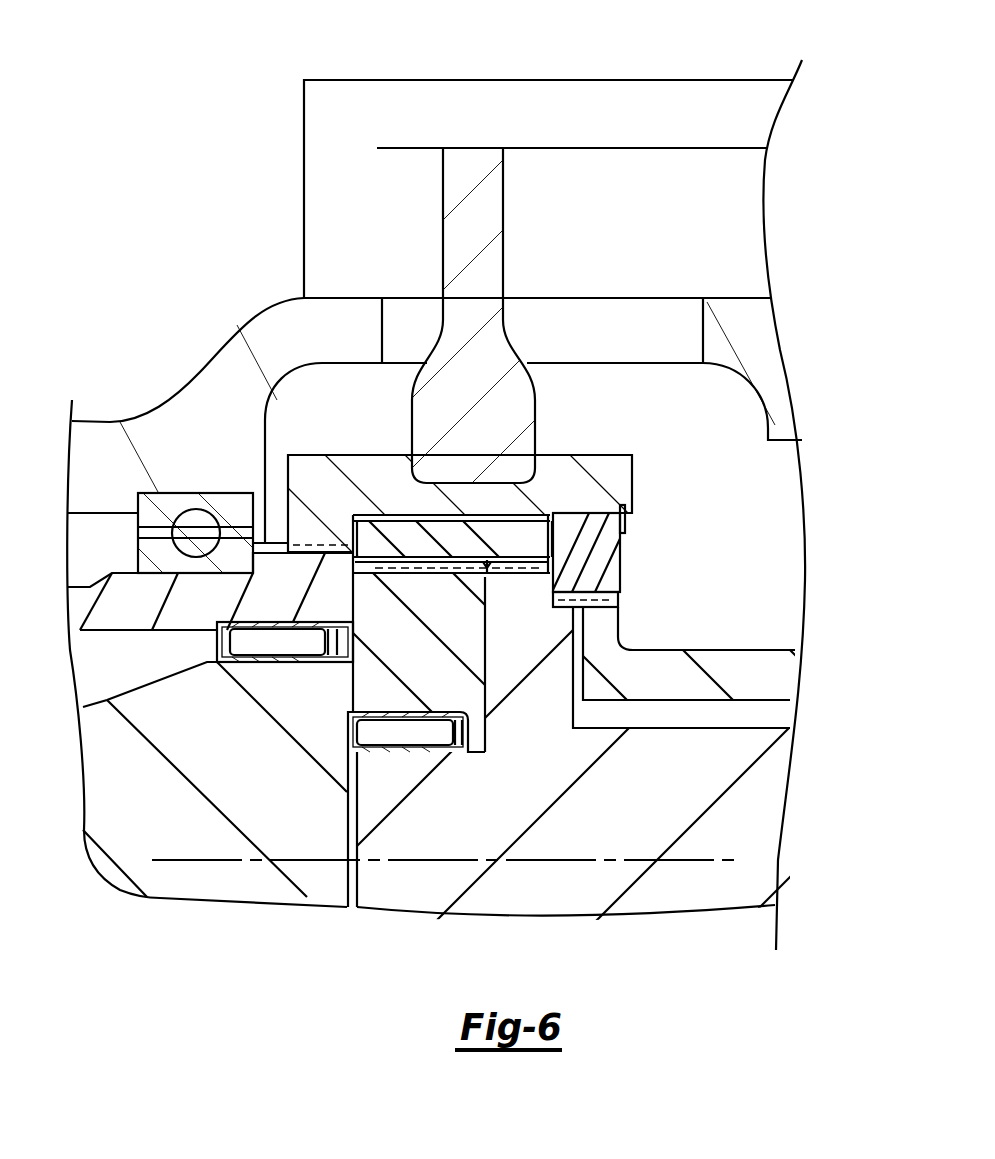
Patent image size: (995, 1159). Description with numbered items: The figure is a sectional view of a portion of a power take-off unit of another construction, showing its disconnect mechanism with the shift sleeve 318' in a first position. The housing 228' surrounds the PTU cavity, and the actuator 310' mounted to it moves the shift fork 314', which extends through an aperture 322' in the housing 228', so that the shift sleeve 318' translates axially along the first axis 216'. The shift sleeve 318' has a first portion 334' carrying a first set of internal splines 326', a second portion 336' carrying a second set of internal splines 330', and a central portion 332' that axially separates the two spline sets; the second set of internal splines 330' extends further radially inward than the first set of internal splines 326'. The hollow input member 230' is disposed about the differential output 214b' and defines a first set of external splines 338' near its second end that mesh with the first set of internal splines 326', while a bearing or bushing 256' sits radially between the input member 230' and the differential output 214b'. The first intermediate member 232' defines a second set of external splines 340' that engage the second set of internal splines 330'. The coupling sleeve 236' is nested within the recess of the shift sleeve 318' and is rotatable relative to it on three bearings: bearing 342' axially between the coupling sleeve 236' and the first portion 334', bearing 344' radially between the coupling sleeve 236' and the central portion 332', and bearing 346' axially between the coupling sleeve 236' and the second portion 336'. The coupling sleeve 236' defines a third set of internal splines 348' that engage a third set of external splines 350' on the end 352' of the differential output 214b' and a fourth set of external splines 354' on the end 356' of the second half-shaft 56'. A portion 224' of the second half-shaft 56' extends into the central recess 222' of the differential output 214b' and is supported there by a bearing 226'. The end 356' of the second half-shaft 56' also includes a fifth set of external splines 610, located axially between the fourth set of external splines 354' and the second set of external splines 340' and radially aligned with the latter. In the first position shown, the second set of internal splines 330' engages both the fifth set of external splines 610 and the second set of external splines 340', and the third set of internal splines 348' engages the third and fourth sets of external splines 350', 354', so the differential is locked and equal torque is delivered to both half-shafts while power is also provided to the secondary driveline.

The actuator 310' is at (554, 484).
The shift fork 314' is at (509, 300).
The aperture 322' is at (437, 372).
The housing 228' is at (112, 613).
The shift sleeve 318' is at (317, 453).
The first portion 334' is at (441, 478).
The first set of external splines 338' is at (197, 513).
The input member 230' is at (76, 593).
The first set of internal splines 326' is at (216, 591).
The bearing or bushing 256' is at (285, 688).
The differential output 214b' is at (182, 784).
The bearing 342' is at (340, 523).
The bearing 344' is at (451, 476).
The coupling sleeve 236' is at (356, 500).
The third set of internal splines 348' is at (451, 602).
The fourth set of external splines 354' is at (504, 608).
The third set of external splines 350' is at (410, 661).
The end 352' is at (530, 679).
The second portion 336' is at (621, 548).
The second set of external splines 340' is at (617, 578).
The fifth set of external splines 610 is at (565, 612).
The second set of internal splines 330' is at (686, 646).
The end 356' is at (676, 691).
The first intermediate member 232' is at (706, 654).
The second half-shaft 56' is at (580, 797).
The bearing 226' is at (426, 759).
The central recess 222' is at (290, 849).
The portion 224' is at (383, 867).
The first axis 216' is at (411, 914).
The bearing 346' is at (620, 484).
The central portion 332' is at (577, 450).